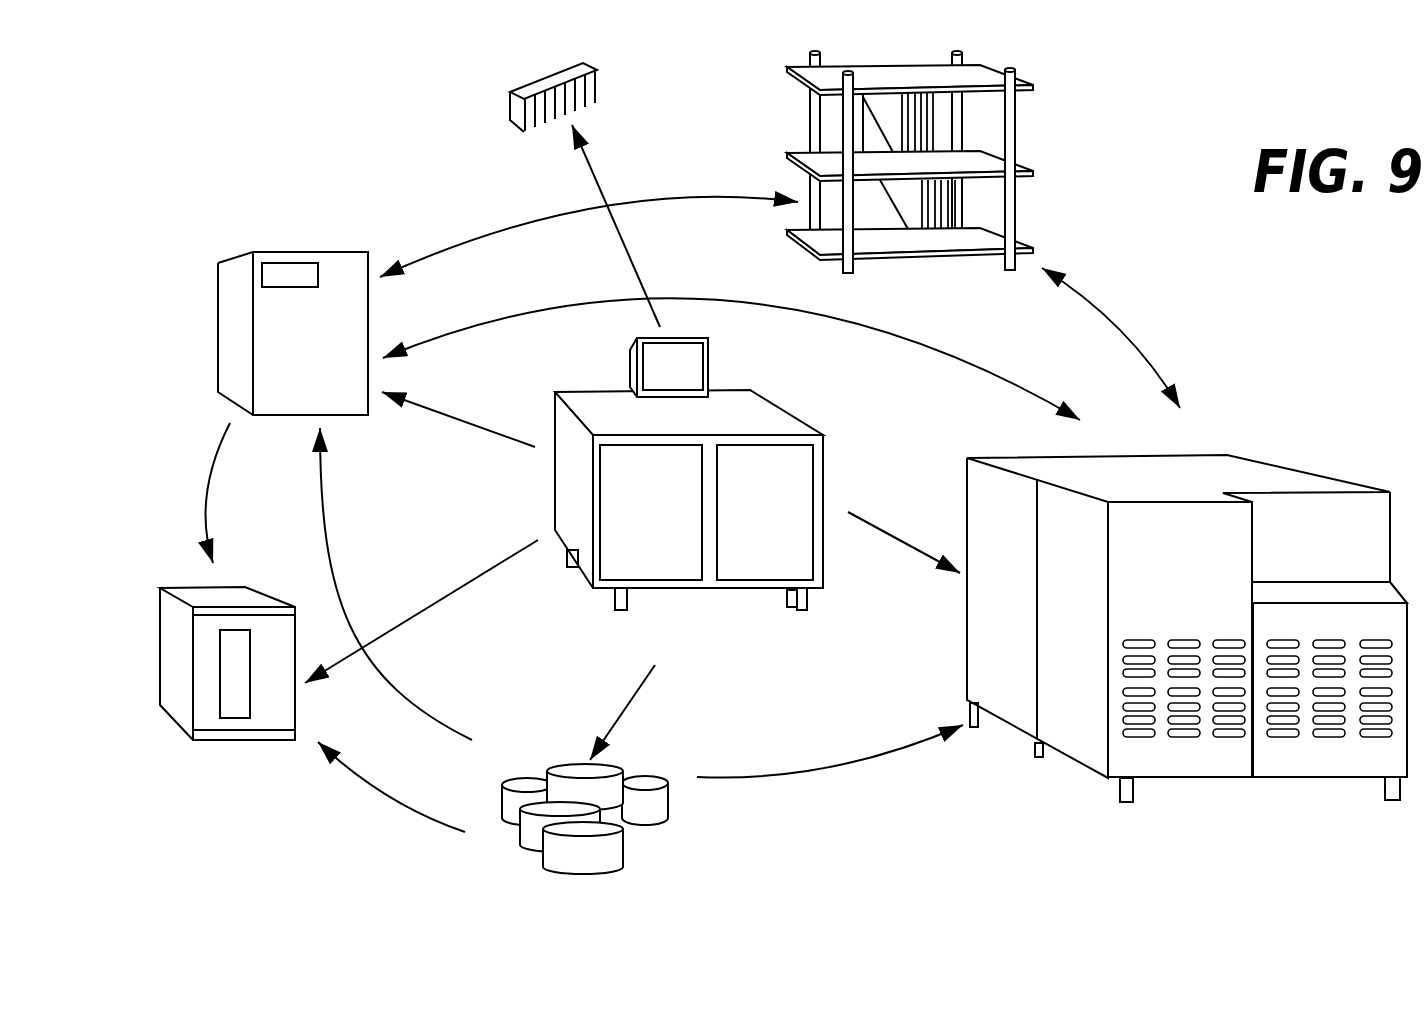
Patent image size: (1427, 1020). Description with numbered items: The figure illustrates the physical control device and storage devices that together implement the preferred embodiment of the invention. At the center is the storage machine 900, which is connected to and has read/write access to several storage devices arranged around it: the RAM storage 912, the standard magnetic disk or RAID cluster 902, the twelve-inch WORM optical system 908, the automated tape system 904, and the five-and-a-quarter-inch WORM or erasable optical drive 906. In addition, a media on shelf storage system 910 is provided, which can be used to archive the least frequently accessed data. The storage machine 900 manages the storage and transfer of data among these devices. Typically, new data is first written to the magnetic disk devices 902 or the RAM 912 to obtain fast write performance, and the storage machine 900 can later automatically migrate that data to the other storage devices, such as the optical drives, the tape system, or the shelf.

The storage machine 900 is at (763, 412).
The standard magnetic disk or RAID cluster 902 is at (525, 843).
The automated tape system 904 is at (160, 615).
The 5.25" WORM or erasable optical drive 906 is at (237, 327).
The 12" WORM optical system 908 is at (1248, 456).
The media on shelf storage system 910 is at (1018, 112).
The RAM storage 912 is at (587, 97).